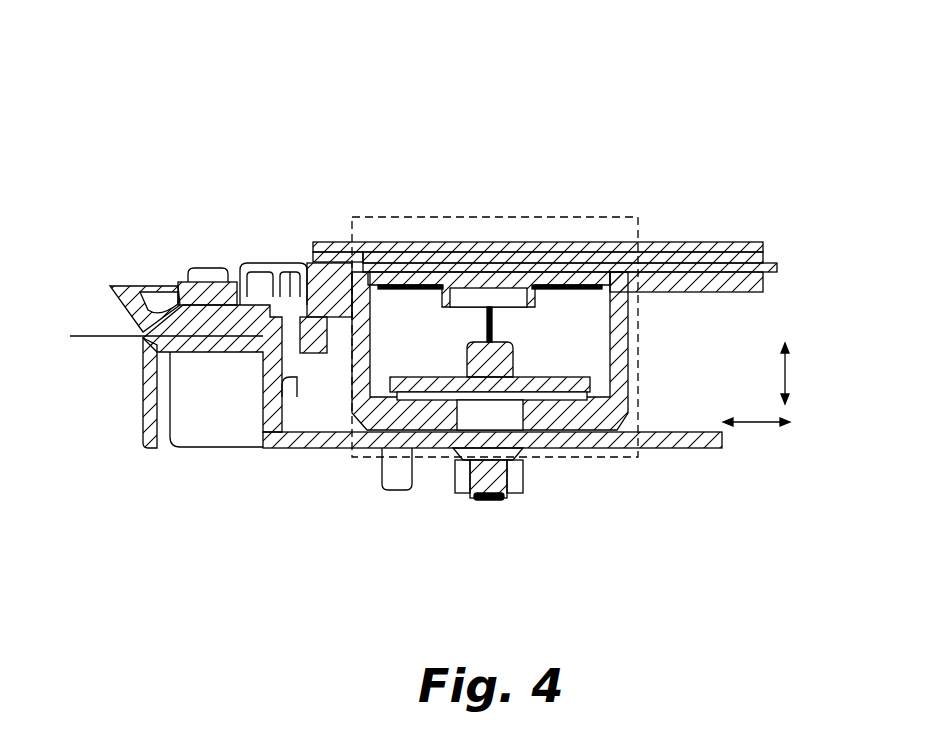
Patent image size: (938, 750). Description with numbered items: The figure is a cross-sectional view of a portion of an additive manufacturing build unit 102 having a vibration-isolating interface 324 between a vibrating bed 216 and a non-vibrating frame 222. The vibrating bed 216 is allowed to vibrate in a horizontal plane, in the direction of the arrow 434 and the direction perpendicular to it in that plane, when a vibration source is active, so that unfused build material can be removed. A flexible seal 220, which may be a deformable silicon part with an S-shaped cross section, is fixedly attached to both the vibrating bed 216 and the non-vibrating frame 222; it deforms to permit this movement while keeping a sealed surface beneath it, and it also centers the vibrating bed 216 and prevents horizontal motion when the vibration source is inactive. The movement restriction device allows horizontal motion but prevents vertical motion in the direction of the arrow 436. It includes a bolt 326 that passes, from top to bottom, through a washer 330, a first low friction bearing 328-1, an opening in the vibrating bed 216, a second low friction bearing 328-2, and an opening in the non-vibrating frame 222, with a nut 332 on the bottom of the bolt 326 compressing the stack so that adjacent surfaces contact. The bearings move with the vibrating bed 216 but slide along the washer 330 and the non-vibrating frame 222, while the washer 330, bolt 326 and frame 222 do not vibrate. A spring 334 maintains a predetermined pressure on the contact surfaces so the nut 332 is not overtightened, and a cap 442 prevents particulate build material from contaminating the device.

The additive manufacturing build unit 102 is at (115, 80).
The vibrating bed 216 is at (688, 450).
The flexible seal 220 is at (285, 283).
The non-vibrating frame 222 is at (330, 443).
The vibration-isolating interface 324 is at (522, 216).
The bolt 326 is at (490, 357).
The first low friction bearing 328-1 is at (547, 394).
The second low friction bearing 328-2 is at (550, 431).
The washer 330 is at (547, 386).
The nut 332 is at (510, 495).
The spring 334 is at (525, 460).
The arrow 434 is at (748, 427).
The arrow 436 is at (787, 370).
The cap 442 is at (573, 282).